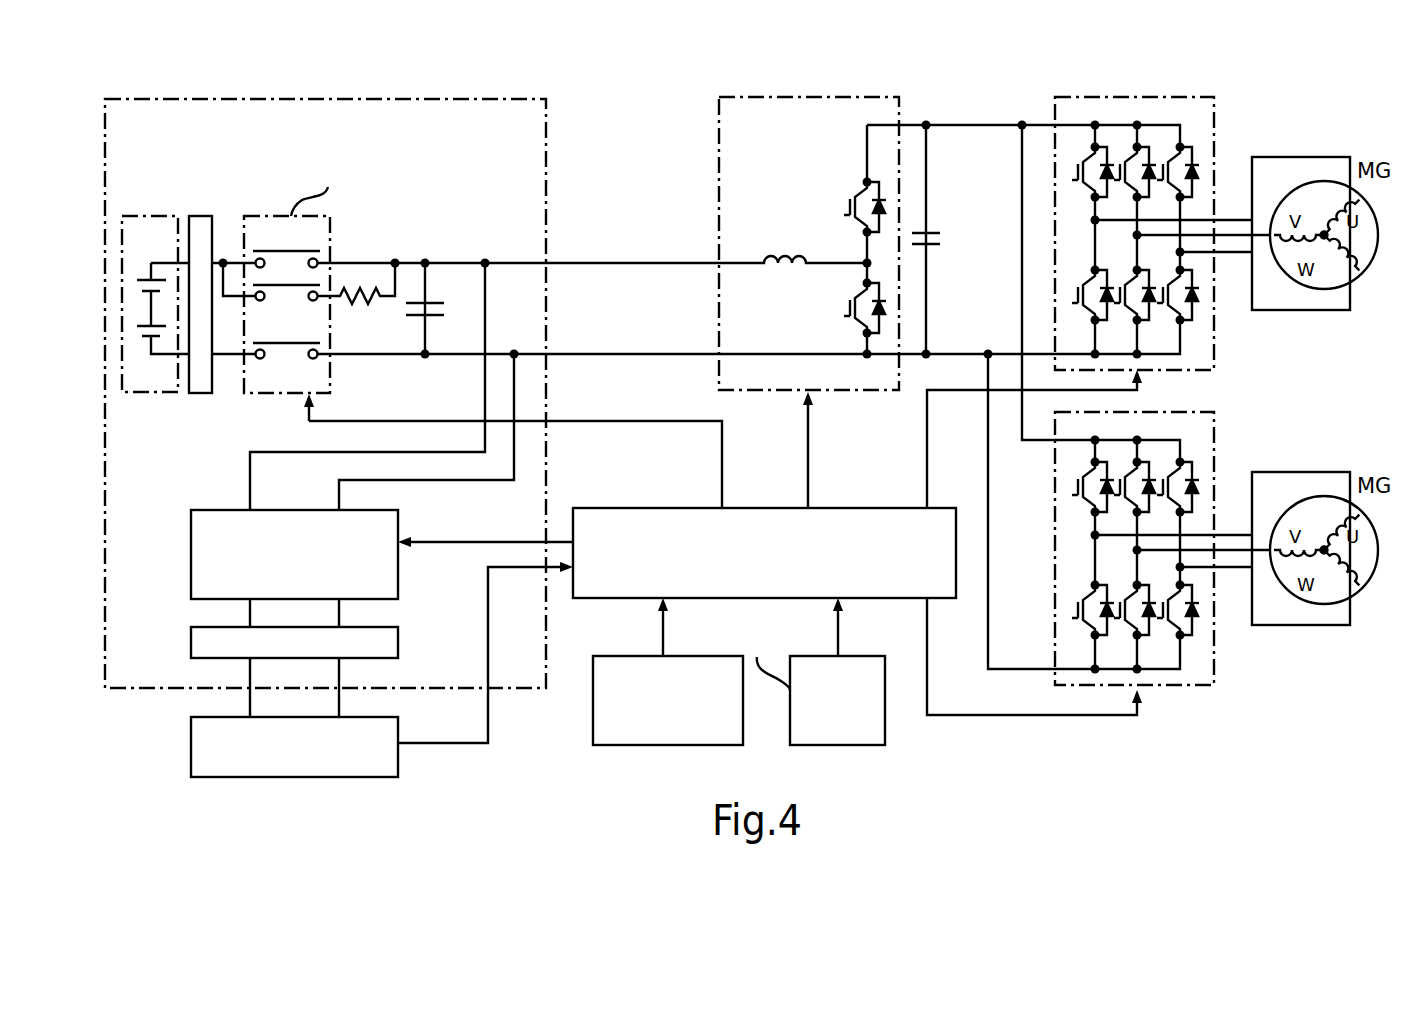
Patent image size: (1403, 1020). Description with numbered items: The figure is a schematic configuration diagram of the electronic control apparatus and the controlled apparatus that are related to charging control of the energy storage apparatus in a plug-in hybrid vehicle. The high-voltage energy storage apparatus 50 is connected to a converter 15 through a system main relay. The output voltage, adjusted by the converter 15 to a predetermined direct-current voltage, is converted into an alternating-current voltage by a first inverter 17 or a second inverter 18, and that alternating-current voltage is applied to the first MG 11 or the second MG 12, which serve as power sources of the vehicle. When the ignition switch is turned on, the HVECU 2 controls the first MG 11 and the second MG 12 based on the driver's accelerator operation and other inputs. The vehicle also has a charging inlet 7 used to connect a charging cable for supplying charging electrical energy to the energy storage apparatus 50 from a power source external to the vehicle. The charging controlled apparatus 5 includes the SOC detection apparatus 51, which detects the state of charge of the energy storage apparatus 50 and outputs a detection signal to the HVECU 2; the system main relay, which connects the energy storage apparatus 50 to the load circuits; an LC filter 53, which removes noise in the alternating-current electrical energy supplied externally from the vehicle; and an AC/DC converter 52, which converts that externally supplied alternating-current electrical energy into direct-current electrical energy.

The HVECU 2 is at (670, 508).
The charging controlled apparatus 5 is at (371, 99).
The charging inlet 7 is at (191, 762).
The first MG 11 is at (1361, 272).
The second MG 12 is at (1361, 587).
The converter 15 is at (822, 97).
The first inverter 17 is at (1190, 97).
The second inverter 18 is at (1190, 413).
The high-voltage energy storage apparatus 50 is at (150, 215).
The SOC detection apparatus 51 is at (201, 216).
The AC/DC converter 52 is at (191, 543).
The LC filter 53 is at (191, 632).